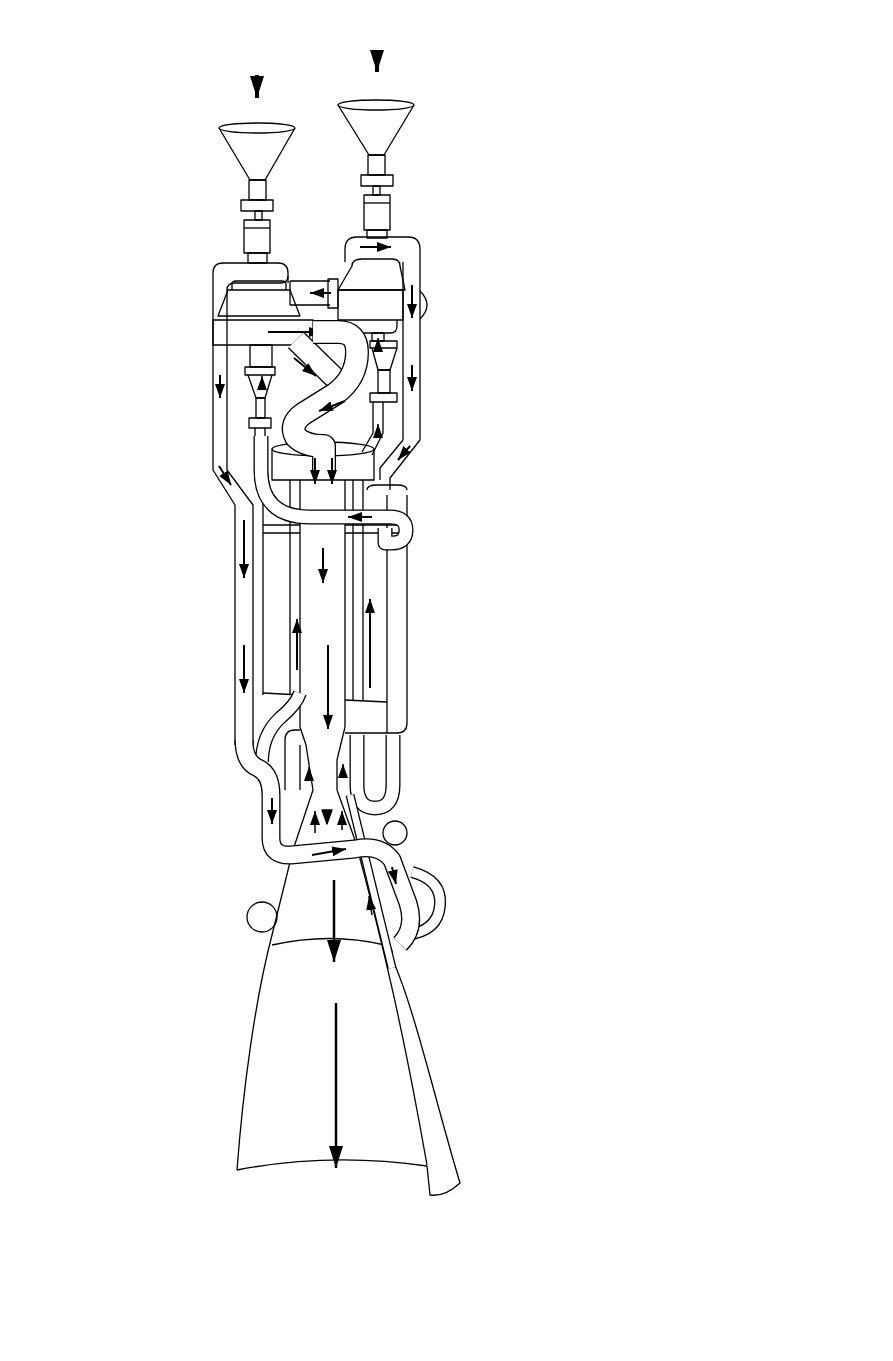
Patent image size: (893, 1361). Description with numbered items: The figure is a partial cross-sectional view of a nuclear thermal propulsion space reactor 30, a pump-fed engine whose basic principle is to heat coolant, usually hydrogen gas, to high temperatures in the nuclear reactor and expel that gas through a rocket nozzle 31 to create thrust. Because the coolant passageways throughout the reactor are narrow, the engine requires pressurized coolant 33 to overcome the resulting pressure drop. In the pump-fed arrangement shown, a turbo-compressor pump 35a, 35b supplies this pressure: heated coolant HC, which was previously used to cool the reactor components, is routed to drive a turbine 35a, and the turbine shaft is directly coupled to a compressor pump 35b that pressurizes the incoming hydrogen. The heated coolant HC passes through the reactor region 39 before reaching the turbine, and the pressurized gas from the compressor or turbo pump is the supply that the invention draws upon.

The nuclear thermal propulsion space reactor 30 is at (148, 408).
The rocket nozzle 31 is at (258, 1017).
The pressurized coolant 33 is at (385, 58).
The turbine 35a is at (430, 306).
The compressor pump 35b is at (405, 236).
The heat exchanger 39 is at (222, 628).
The heated coolant HC is at (245, 388).